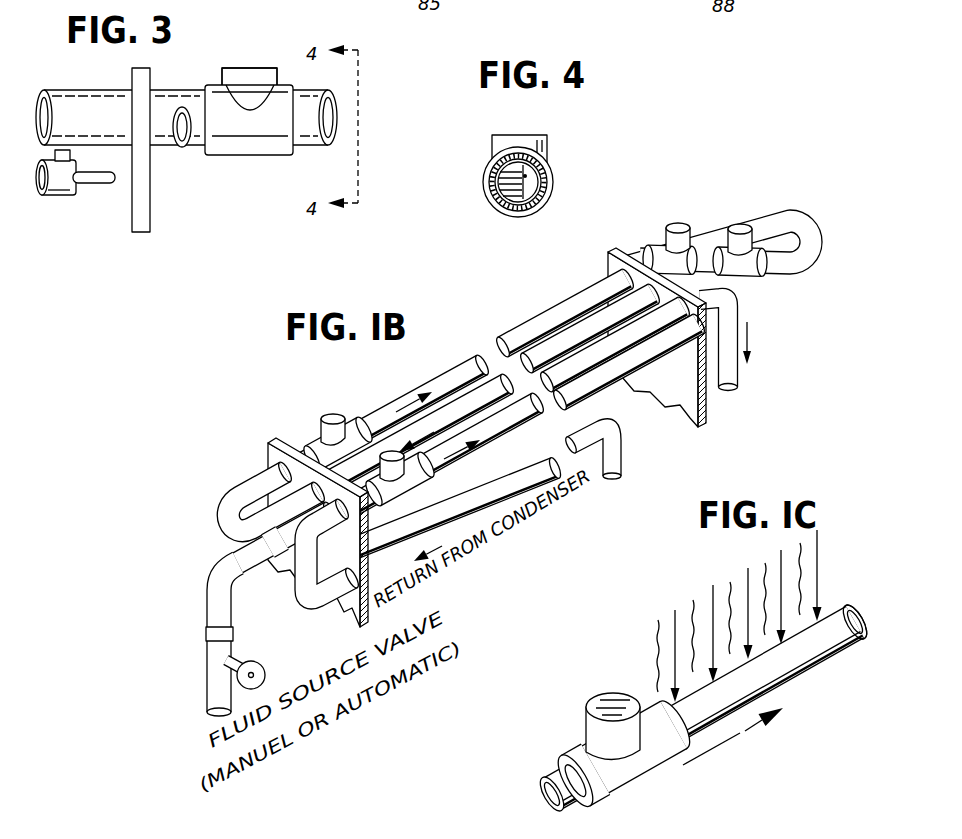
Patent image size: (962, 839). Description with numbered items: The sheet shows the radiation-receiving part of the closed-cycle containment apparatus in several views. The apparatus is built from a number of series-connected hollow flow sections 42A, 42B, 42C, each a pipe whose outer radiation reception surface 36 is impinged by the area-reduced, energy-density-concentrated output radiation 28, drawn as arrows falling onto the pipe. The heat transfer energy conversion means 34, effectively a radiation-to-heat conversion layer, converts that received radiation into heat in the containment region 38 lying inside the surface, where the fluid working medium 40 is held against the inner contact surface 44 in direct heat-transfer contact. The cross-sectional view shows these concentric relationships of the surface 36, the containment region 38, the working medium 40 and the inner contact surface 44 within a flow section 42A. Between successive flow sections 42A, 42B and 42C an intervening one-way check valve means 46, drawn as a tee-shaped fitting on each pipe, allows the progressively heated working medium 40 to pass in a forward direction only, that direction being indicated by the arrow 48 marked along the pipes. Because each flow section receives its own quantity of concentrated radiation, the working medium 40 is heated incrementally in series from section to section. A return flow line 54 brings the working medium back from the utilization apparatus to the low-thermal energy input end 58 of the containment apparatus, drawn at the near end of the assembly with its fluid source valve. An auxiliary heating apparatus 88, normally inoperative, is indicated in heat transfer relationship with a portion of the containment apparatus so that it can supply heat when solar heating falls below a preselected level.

In FIG. 1C, the output radiation 28 is at (822, 553).
In FIG. 3, the heat transfer energy conversion means 34 is at (162, 80).
In FIG. 4, the radiation reception surface 36 is at (520, 167).
In FIG. 1B, the radiation reception surface 36 is at (450, 378).
In FIG. 1C, the radiation reception surface 36 is at (728, 675).
In FIG. 4, the containment region 38 is at (547, 184).
In FIG. 4, the working medium 40 is at (525, 218).
In FIG. 3, the hollow flow section 42A is at (167, 148).
In FIG. 4, the hollow flow section 42A is at (505, 216).
In FIG. 1B, the hollow flow section 42A is at (630, 348).
In FIG. 1C, the hollow flow section 42A is at (806, 665).
In FIG. 3, the hollow flow section 42B is at (335, 134).
In FIG. 1B, the hollow flow section 42B is at (594, 325).
In FIG. 1B, the hollow flow section 42C is at (518, 330).
In FIG. 4, the inner contact surface 44 is at (500, 195).
In FIG. 3, the one-way check valve means 46 is at (252, 68).
In FIG. 4, the one-way check valve means 46 is at (505, 135).
In FIG. 1C, the one-way check valve means 46 is at (603, 700).
In FIG. 1B, the direction of flow arrow 48 is at (397, 406).
In FIG. 1C, the direction of flow arrow 48 is at (748, 736).
In FIG. 1B, the return flow line 54 is at (303, 620).
In FIG. 1B, the low-thermal energy input end 58 is at (292, 600).
In FIG. 1B, the auxiliary heating apparatus 88 is at (616, 396).